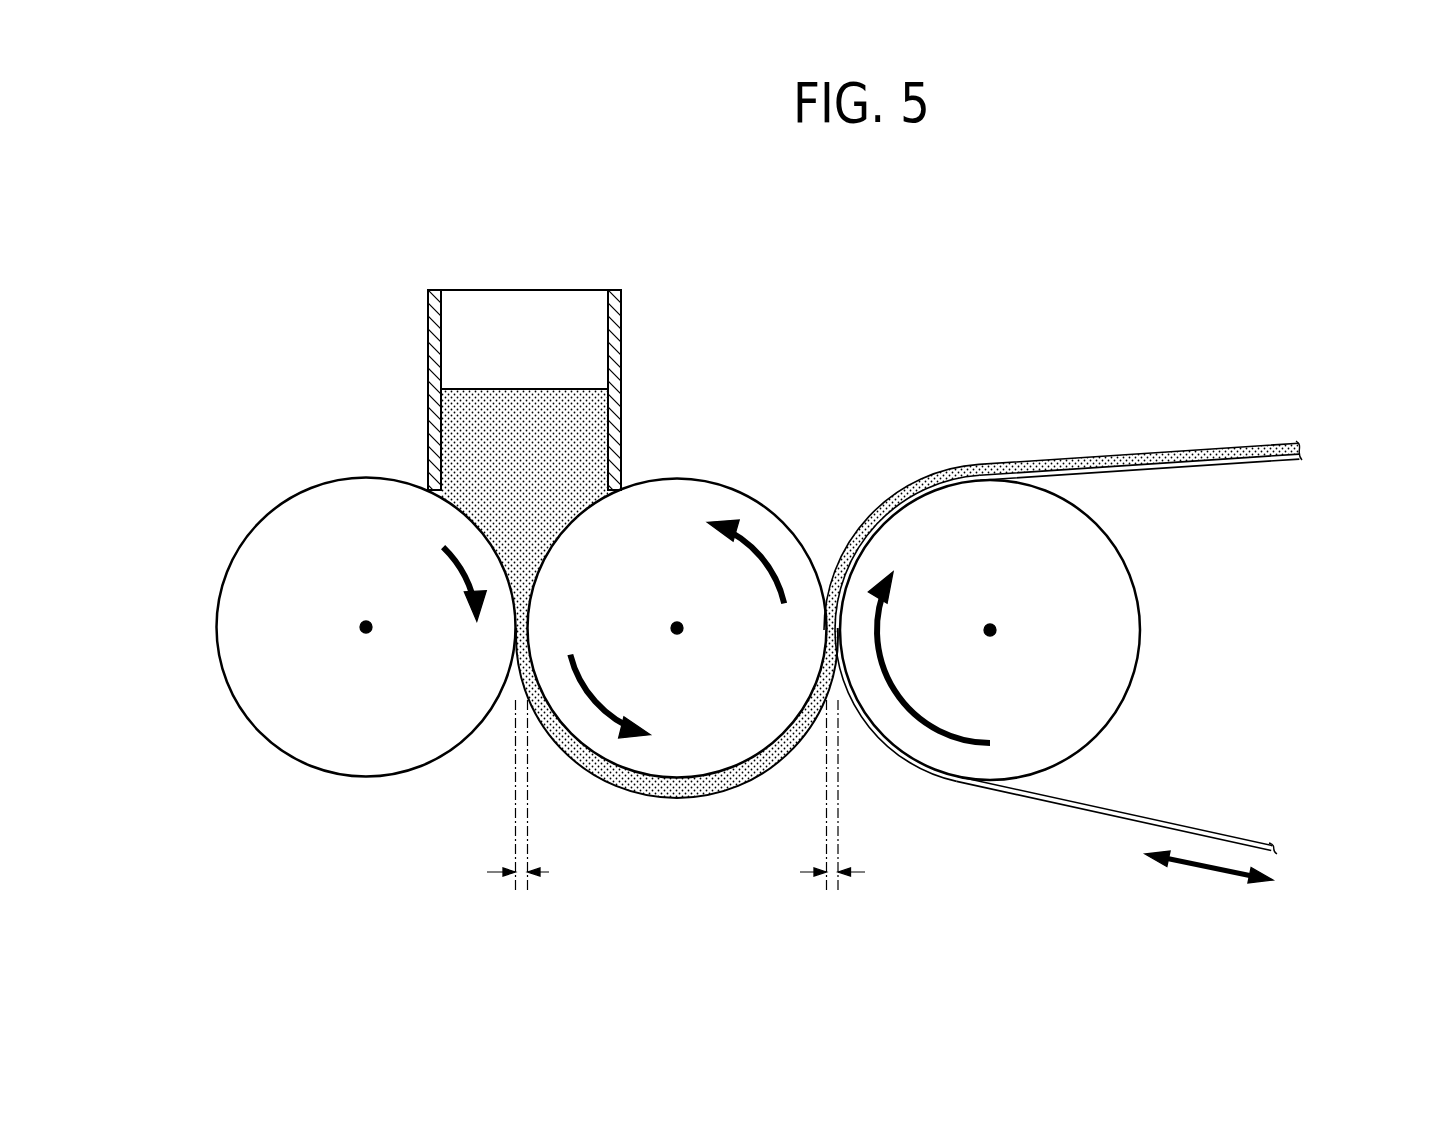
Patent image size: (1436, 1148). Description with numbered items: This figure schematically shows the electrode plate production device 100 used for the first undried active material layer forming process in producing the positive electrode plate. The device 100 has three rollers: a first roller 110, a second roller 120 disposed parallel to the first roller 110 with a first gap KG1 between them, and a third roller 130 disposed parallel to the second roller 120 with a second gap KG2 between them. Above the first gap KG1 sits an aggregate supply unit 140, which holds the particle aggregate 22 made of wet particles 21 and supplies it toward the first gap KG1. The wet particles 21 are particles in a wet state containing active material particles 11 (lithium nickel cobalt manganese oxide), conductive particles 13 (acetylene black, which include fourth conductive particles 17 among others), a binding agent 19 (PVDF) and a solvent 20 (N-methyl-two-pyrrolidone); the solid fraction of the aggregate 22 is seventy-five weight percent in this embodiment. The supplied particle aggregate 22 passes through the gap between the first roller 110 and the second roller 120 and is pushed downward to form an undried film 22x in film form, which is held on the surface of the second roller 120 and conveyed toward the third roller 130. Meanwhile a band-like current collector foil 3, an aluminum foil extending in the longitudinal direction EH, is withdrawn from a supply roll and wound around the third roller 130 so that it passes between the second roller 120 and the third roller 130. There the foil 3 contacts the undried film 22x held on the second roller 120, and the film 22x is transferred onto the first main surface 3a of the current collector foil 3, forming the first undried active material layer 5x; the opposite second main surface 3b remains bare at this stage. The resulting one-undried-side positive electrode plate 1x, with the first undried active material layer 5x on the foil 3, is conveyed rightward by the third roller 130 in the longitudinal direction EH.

The electrode plate production device 100 is at (931, 354).
The first roller 110 is at (318, 703).
The second roller 120 is at (755, 685).
The third roller 130 is at (1067, 685).
The aggregate supply unit 140 is at (620, 298).
The particle aggregate 22 is at (639, 636).
The wet particles 21 is at (639, 636).
The undried film 22x is at (668, 798).
The current collector foil 3 is at (1090, 612).
The first main surface 3a is at (1068, 636).
The second main surface 3b is at (1068, 636).
The one-undried-side positive electrode plate 1x is at (1103, 814).
The first undried active material layer 5x is at (1248, 447).
The first gap KG1 is at (518, 814).
The second gap KG2 is at (832, 814).
The longitudinal direction EH is at (1209, 875).
The active material particles 11 is at (639, 636).
The conductive particles 13 is at (639, 636).
The fourth conductive particles 17 is at (639, 636).
The binding agent 19 is at (639, 636).
The solvent 20 is at (639, 636).